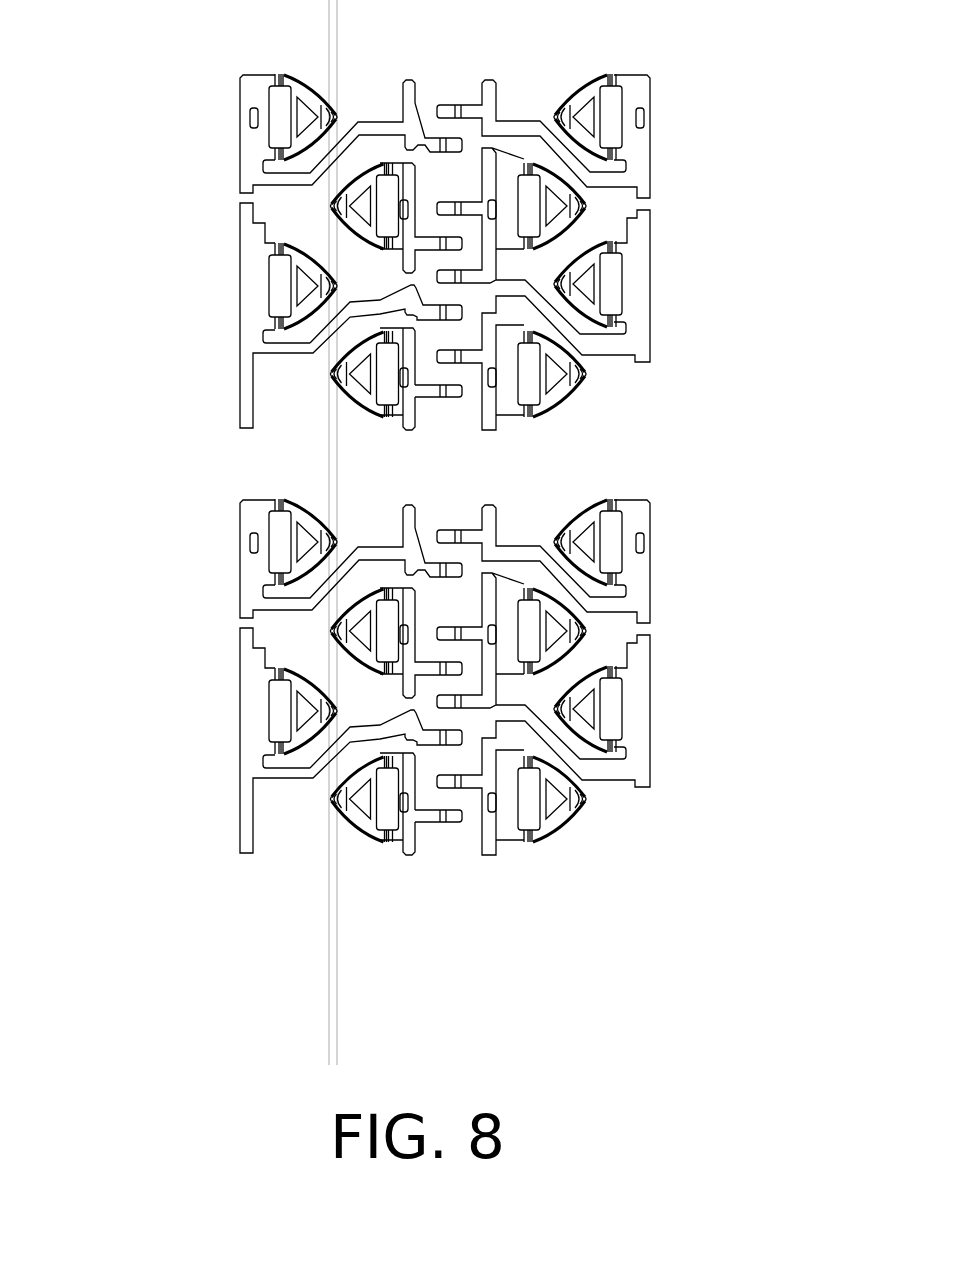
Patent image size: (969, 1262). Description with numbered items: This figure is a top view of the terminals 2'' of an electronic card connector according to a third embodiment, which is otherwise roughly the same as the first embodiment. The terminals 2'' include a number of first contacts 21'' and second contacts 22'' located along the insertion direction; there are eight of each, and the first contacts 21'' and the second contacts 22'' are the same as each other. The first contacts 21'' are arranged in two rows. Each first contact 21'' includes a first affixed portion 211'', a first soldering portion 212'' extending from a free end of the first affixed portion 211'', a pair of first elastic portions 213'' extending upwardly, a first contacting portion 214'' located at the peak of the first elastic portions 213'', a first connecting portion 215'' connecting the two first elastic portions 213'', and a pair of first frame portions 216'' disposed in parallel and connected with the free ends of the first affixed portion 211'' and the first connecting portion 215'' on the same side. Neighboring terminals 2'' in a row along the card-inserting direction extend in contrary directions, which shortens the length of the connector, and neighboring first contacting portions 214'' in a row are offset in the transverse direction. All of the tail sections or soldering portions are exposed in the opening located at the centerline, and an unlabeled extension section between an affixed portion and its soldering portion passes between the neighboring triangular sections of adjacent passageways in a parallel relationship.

The terminal 2'' is at (226, 94).
The second contact 22'' is at (266, 315).
The first contact 21'' is at (261, 740).
The first affixed portion 211'' is at (212, 697).
The first soldering portion 212'' is at (448, 878).
The first elastic portion 213'' is at (574, 858).
The first contacting portion 214'' is at (640, 817).
The first connecting portion 215'' is at (353, 851).
The first frame portion 216'' is at (194, 806).